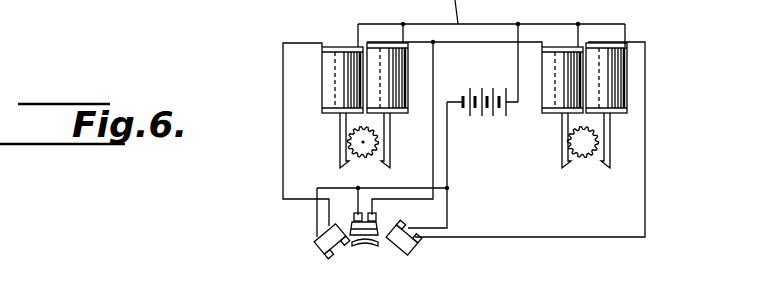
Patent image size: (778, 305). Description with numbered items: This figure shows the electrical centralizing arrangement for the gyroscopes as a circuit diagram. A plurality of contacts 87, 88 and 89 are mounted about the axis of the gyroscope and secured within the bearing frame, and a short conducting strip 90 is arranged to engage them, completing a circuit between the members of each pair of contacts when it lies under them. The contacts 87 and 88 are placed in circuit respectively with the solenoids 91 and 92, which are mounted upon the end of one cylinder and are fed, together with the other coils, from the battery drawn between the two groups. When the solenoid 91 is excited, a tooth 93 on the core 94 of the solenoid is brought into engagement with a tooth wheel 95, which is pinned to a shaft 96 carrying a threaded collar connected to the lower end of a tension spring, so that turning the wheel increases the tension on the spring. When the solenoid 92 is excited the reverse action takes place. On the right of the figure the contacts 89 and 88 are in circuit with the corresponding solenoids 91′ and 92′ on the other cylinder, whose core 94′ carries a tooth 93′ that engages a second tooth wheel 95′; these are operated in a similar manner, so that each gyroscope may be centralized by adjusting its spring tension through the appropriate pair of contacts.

The contact 87 is at (321, 244).
The contact 88 is at (376, 219).
The contact 89 is at (413, 247).
The conducting strip 90 is at (367, 248).
The solenoid 91 is at (331, 78).
The solenoid 92 is at (408, 78).
The tooth 93 is at (343, 161).
The core 94 is at (340, 126).
The tooth wheel 95 is at (364, 158).
The shaft 96 is at (365, 142).
The solenoid 91′ is at (547, 74).
The solenoid 92′ is at (612, 114).
The tooth 93′ is at (608, 161).
The core 94′ is at (562, 126).
The tooth wheel 95′ is at (582, 160).